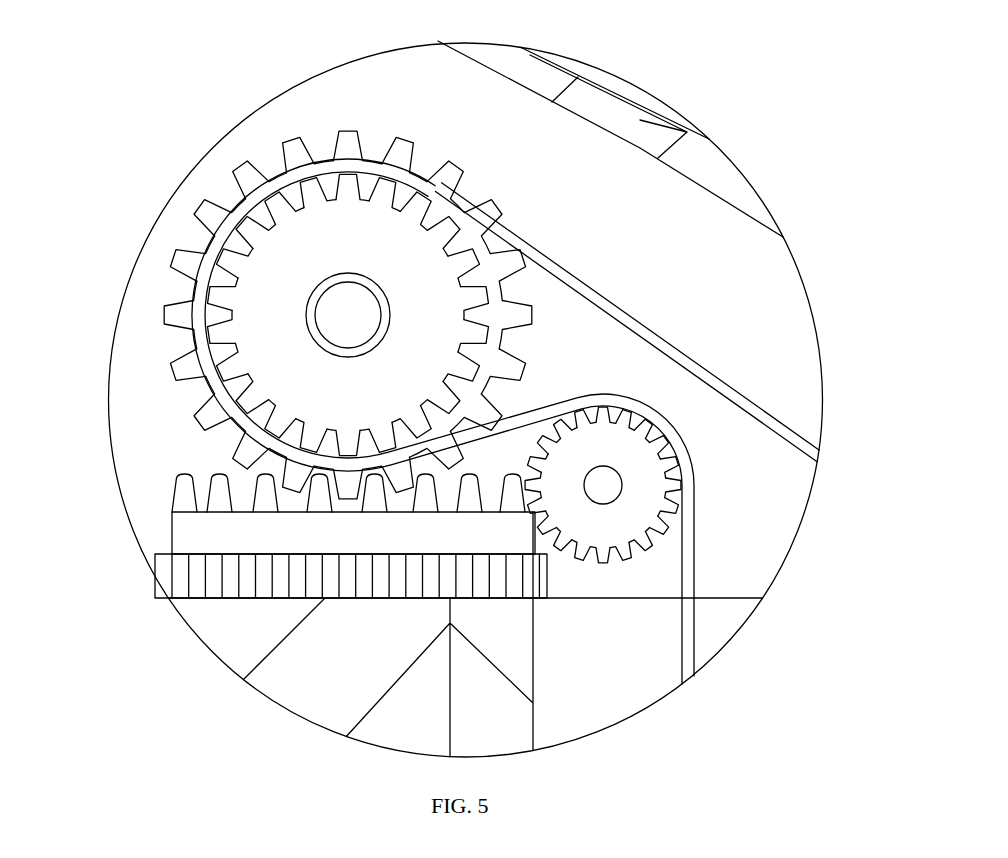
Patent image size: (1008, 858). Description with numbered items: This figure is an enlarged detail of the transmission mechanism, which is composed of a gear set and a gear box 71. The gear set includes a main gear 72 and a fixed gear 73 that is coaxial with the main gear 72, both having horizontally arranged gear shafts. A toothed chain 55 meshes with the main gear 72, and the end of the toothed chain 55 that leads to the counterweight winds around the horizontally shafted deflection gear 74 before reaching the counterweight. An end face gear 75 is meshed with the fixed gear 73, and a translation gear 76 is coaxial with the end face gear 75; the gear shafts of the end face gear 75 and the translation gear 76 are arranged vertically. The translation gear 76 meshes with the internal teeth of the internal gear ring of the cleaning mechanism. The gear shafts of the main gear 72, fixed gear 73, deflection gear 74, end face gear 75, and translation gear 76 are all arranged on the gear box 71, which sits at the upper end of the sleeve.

The toothed chain 55 is at (645, 327).
The gear box 71 is at (594, 106).
The main gear 72 is at (252, 286).
The fixed gear 73 is at (312, 168).
The deflection gear 74 is at (640, 478).
The end face gear 75 is at (192, 527).
The translation gear 76 is at (205, 577).